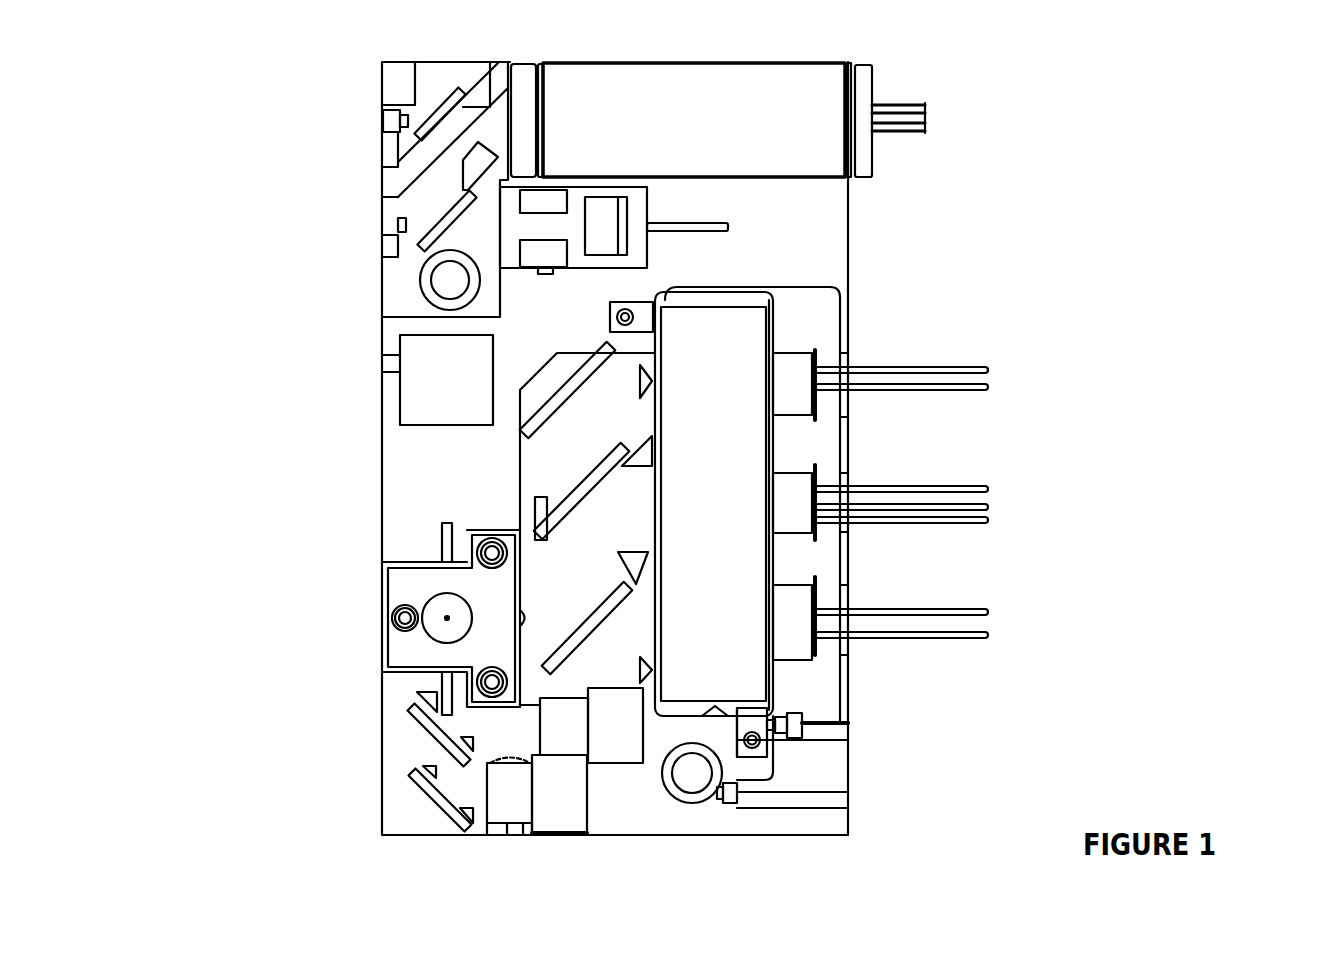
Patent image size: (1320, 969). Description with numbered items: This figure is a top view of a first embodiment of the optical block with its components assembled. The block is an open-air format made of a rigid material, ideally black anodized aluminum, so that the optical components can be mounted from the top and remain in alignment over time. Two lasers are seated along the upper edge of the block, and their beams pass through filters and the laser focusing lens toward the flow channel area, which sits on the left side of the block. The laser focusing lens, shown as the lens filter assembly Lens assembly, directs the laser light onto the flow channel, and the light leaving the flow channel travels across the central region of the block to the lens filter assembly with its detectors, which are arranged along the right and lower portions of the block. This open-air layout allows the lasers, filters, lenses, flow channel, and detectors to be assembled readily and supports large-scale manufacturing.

The lens filter assembly Lens assembly is at (347, 382).